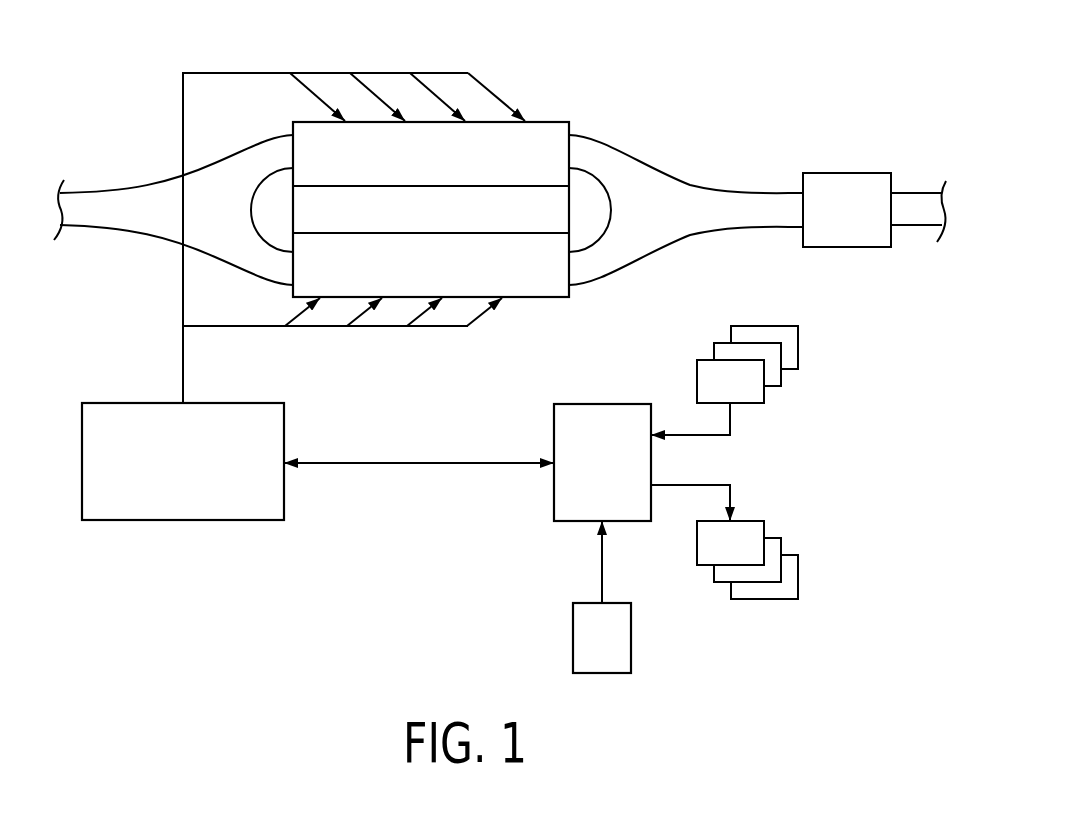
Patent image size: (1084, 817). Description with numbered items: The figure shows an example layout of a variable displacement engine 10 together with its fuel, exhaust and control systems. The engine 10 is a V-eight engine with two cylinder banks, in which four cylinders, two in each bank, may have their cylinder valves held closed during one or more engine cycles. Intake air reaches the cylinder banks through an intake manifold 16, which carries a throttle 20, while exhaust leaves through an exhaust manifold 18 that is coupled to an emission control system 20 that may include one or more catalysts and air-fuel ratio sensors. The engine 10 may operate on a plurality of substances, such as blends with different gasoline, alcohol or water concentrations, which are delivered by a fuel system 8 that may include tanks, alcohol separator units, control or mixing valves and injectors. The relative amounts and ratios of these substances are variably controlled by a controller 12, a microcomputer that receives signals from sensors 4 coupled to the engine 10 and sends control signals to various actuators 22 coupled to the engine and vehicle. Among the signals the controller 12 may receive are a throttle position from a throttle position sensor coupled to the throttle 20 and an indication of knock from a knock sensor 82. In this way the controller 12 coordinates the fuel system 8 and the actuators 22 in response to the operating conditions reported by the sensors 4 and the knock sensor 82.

The variable displacement engine 10 is at (572, 90).
The intake manifold 16 is at (167, 185).
The exhaust manifold 18 is at (637, 180).
The throttle / emission control system 20 is at (140, 202).
The fuel system 8 is at (182, 521).
The controller 12 is at (574, 522).
The sensors 4 is at (798, 345).
The actuators 22 is at (798, 578).
The knock sensor 82 is at (631, 640).